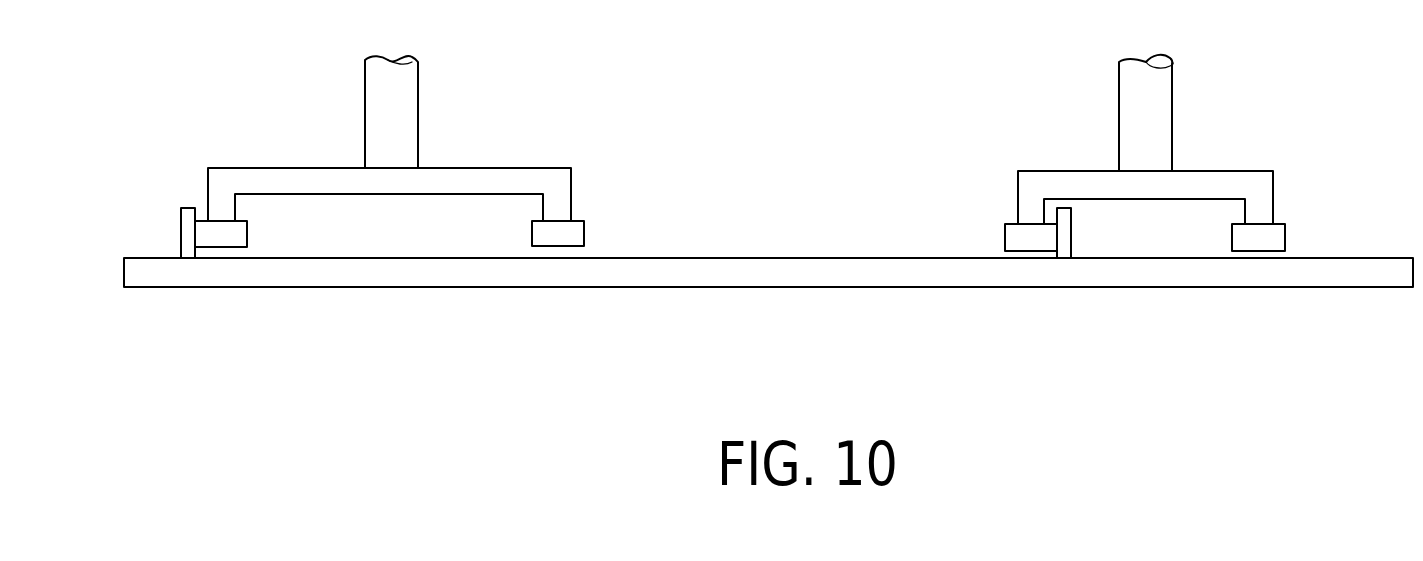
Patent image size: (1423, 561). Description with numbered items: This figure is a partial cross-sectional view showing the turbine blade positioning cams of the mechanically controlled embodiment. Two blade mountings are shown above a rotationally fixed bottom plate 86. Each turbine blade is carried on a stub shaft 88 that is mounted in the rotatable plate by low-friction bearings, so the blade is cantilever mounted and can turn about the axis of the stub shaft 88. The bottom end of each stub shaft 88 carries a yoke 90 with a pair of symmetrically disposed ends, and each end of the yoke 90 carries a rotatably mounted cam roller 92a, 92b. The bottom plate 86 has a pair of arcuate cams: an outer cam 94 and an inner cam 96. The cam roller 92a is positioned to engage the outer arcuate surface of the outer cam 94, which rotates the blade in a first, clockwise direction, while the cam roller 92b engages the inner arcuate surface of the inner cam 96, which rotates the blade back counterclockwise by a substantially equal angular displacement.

The bottom plate 86 is at (623, 272).
The stub shaft 88 is at (402, 108).
The yoke 90 is at (308, 168).
The cam roller 92a is at (230, 232).
The cam roller 92b is at (550, 233).
The outer cam 94 is at (187, 227).
The inner cam 96 is at (1067, 235).